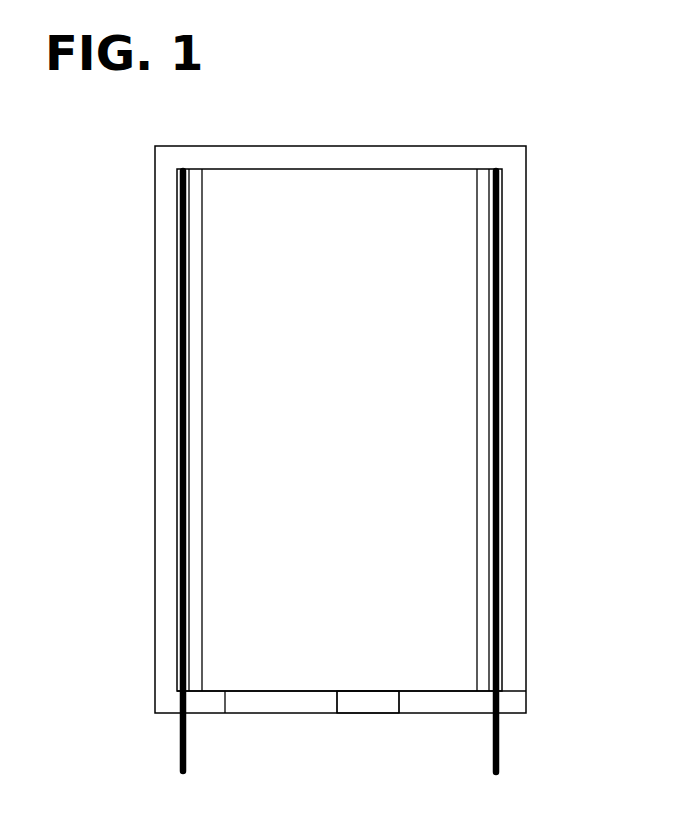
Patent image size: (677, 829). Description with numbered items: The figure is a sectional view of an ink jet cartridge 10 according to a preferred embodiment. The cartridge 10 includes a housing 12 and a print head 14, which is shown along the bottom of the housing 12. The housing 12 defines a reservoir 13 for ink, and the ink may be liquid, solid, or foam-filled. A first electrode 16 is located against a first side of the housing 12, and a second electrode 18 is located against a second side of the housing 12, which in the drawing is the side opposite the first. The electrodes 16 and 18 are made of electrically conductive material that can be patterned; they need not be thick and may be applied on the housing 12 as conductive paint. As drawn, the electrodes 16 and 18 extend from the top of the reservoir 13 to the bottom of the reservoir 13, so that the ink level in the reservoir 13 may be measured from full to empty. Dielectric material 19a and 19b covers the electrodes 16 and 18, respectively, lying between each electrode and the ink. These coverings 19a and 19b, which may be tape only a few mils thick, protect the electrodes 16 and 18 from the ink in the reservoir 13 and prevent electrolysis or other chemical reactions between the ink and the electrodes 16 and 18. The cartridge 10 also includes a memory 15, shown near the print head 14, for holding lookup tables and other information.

The ink jet cartridge 10 is at (562, 243).
The housing 12 is at (512, 435).
The reservoir 13 is at (288, 290).
The print head 14 is at (280, 702).
The memory 15 is at (368, 702).
The first electrode 16 is at (182, 635).
The second electrode 18 is at (493, 580).
The dielectric material 19a is at (195, 552).
The dielectric material 19b is at (482, 360).